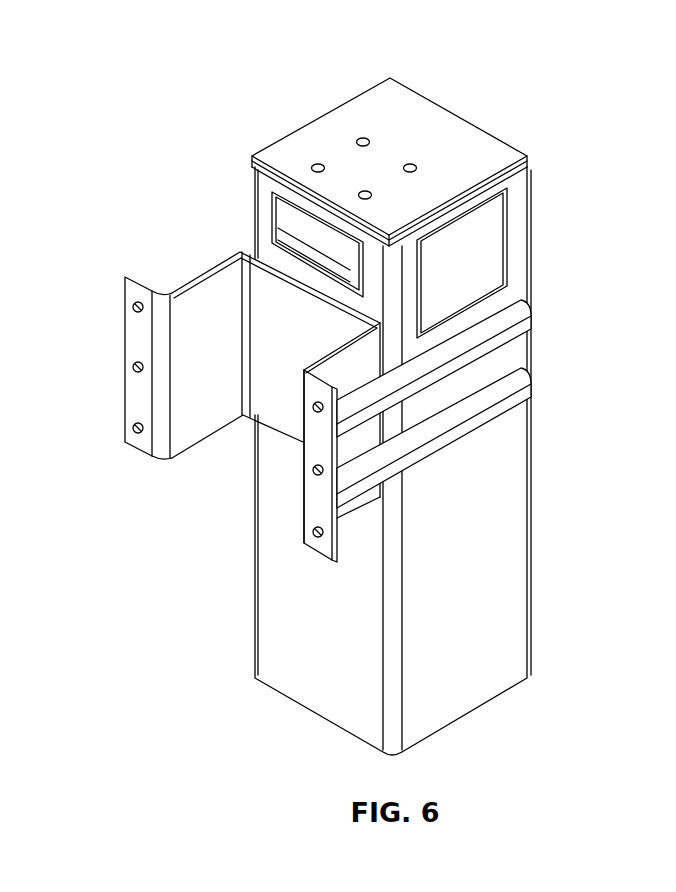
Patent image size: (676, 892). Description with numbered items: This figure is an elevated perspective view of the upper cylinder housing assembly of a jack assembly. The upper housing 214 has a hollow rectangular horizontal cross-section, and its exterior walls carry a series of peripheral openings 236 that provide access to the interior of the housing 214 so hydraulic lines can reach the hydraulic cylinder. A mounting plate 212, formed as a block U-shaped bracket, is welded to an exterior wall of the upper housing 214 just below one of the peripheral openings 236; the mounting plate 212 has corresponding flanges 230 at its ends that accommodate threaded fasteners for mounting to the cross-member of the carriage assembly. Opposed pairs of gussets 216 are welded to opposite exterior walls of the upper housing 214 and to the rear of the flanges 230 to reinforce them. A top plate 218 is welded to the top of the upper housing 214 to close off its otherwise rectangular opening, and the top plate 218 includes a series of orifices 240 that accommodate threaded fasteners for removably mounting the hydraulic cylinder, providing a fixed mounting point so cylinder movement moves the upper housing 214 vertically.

The mounting plate 212 is at (193, 430).
The upper housing 214 is at (520, 556).
The gussets 216 is at (528, 312).
The top plate 218 is at (453, 132).
The flanges 230 is at (133, 352).
The peripheral openings 236 is at (285, 218).
The orifices 240 is at (356, 141).